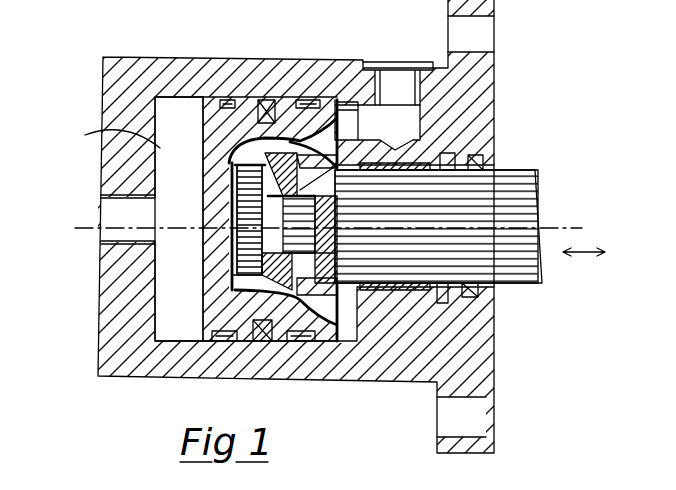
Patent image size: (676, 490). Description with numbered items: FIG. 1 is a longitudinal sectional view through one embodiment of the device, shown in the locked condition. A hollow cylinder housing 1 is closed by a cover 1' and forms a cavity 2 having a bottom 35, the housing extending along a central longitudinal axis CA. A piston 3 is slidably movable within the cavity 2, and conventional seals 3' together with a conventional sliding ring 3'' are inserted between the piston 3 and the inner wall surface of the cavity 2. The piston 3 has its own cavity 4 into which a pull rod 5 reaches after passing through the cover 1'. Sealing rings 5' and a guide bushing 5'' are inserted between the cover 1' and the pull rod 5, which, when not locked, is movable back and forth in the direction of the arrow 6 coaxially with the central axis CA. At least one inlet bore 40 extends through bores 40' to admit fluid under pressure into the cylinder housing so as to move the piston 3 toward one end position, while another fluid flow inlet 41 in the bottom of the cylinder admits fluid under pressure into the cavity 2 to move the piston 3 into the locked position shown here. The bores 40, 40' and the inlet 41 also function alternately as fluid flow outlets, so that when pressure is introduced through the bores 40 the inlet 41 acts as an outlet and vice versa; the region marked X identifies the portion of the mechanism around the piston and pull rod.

The housing 1 is at (338, 245).
The housing flange 1' is at (484, 226).
The chamber 2 is at (185, 308).
The sleeve 3 is at (338, 245).
The sealing rings 3' is at (242, 222).
The sealing rings 3'' is at (275, 214).
The ball member 4 is at (240, 157).
The shaft 5 is at (416, 208).
The sealing rings 5' is at (488, 303).
The sealing rings 5'' is at (494, 129).
The axial movement direction 6 is at (580, 258).
The passage 35 is at (110, 141).
The valve plug 40 is at (398, 57).
The valve chamber 40' is at (377, 125).
The opening 41 is at (110, 212).
The section mark X is at (337, 100).
The central axis CA is at (83, 218).